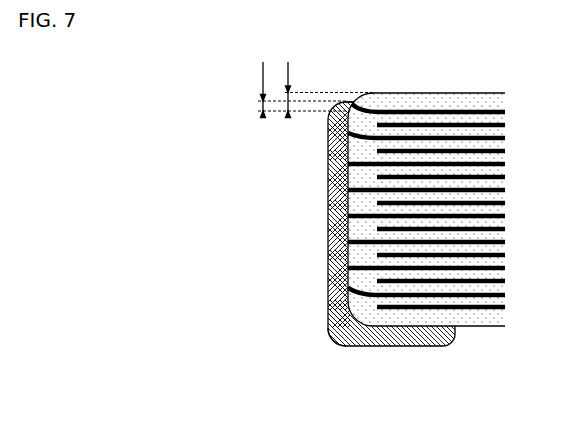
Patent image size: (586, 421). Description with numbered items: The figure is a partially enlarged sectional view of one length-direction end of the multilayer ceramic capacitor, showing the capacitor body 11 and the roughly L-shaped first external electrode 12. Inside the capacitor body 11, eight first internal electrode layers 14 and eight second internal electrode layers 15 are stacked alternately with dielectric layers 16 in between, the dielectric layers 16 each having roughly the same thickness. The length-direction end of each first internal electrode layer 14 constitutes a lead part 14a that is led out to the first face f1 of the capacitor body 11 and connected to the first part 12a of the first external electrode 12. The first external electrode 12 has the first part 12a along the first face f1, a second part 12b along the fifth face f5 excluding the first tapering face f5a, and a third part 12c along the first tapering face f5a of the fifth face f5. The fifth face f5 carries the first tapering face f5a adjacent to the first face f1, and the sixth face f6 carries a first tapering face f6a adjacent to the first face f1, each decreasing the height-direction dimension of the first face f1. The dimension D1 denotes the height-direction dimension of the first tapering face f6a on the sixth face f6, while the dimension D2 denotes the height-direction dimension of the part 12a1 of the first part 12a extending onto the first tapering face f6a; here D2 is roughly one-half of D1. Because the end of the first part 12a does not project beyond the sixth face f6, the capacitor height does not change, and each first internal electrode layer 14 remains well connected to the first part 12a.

The capacitor body 11 is at (397, 92).
The first external electrode 12 is at (328, 172).
The first part 12a is at (332, 240).
The part extending onto the first tapering face 12a1 is at (345, 102).
The second part 12b is at (408, 343).
The third part 12c is at (350, 328).
The first internal electrode layer 14 is at (427, 137).
The lead part 14a is at (350, 135).
The second internal electrode layer 15 is at (450, 150).
The dielectric layer 16 is at (471, 143).
The first face f1 is at (348, 212).
The fifth face f5 is at (496, 327).
The first tapering face f5a is at (362, 327).
The sixth face f6 is at (497, 92).
The first tapering face f6a is at (368, 93).
The height-direction dimension D1 is at (321, 90).
The height-direction dimension D2 is at (296, 90).